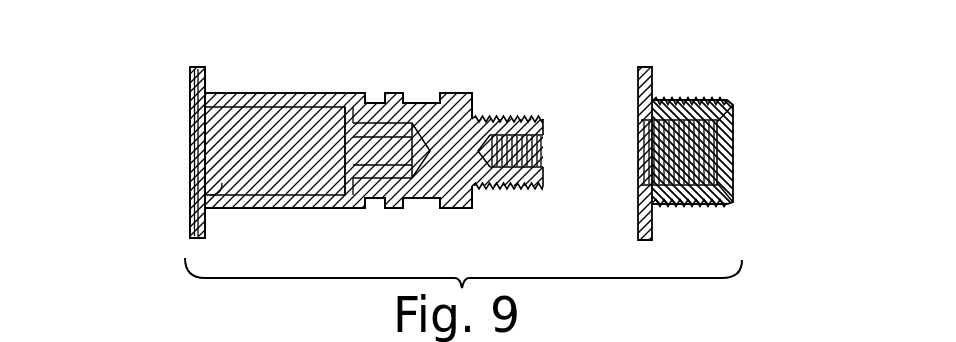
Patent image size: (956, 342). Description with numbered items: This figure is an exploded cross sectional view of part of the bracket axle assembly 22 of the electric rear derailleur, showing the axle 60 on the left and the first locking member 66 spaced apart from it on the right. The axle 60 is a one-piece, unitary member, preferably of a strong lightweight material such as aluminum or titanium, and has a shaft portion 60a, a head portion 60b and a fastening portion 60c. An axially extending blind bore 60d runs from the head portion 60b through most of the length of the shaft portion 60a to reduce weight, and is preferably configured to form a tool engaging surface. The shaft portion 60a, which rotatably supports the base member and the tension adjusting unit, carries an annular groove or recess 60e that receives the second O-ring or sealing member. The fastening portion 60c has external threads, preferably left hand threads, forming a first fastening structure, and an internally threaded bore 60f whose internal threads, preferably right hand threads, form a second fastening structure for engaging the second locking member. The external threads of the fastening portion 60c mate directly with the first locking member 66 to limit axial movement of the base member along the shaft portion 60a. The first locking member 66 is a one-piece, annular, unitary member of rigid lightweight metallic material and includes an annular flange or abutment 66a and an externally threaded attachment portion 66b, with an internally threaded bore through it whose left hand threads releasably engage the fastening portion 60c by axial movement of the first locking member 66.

The bracket axle assembly 22 is at (257, 69).
The axle 60 is at (294, 92).
The shaft portion 60a is at (318, 215).
The head portion 60b is at (184, 77).
The fastening portion 60c is at (523, 196).
The blind bore 60d is at (220, 195).
The annular groove 60e is at (375, 103).
The internally threaded bore 60f is at (541, 141).
The first locking member 66 is at (725, 93).
The annular flange 66a is at (637, 100).
The externally threaded attachment portion 66b is at (673, 206).